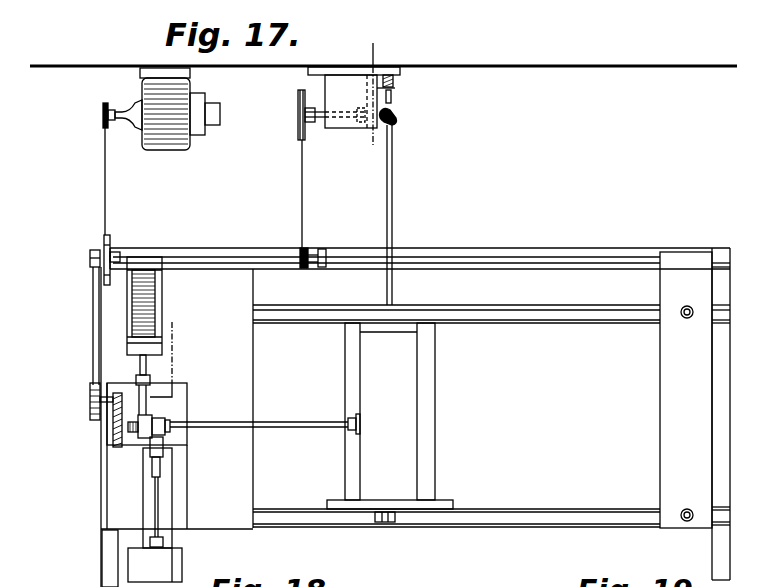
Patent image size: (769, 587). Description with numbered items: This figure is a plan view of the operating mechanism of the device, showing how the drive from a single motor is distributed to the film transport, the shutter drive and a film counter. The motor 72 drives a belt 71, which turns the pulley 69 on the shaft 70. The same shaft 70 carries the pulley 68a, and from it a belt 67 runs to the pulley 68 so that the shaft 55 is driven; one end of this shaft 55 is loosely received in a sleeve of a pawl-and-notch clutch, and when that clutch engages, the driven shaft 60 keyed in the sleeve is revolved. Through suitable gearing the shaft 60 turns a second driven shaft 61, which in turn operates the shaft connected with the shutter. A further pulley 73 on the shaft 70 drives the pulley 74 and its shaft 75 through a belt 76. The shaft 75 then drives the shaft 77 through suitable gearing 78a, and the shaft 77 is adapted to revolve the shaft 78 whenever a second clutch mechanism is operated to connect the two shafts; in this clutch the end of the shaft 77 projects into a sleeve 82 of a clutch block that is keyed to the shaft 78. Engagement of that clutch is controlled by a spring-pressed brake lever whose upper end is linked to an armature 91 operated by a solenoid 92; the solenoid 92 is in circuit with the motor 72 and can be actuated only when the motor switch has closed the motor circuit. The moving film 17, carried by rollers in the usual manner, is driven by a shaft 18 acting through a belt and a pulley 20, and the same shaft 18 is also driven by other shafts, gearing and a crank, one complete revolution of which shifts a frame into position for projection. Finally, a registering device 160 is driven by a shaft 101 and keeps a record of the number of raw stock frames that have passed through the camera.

The moving film 17 is at (479, 55).
The shaft 18 is at (174, 335).
The pulley 20 is at (398, 53).
The shaft 55 is at (322, 120).
The driven shaft 60 is at (395, 130).
The second driven shaft 61 is at (393, 231).
The belt 67 is at (304, 205).
The pulley 68 is at (299, 132).
The pulley 68a is at (301, 252).
The pulley 69 is at (117, 232).
The shaft 70 is at (204, 257).
The belt 71 is at (112, 184).
The motor 72 is at (182, 143).
The pulley 73 is at (92, 262).
The pulley 74 is at (91, 404).
The shaft 75 is at (113, 412).
The belt 76 is at (92, 345).
The shaft 77 is at (133, 438).
The shaft 78 is at (205, 424).
The gearing 78a is at (118, 436).
The sleeve 82 is at (160, 420).
The armature 91 is at (147, 367).
The solenoid 92 is at (152, 312).
The shaft 101 is at (160, 519).
The registering device 160 is at (163, 566).